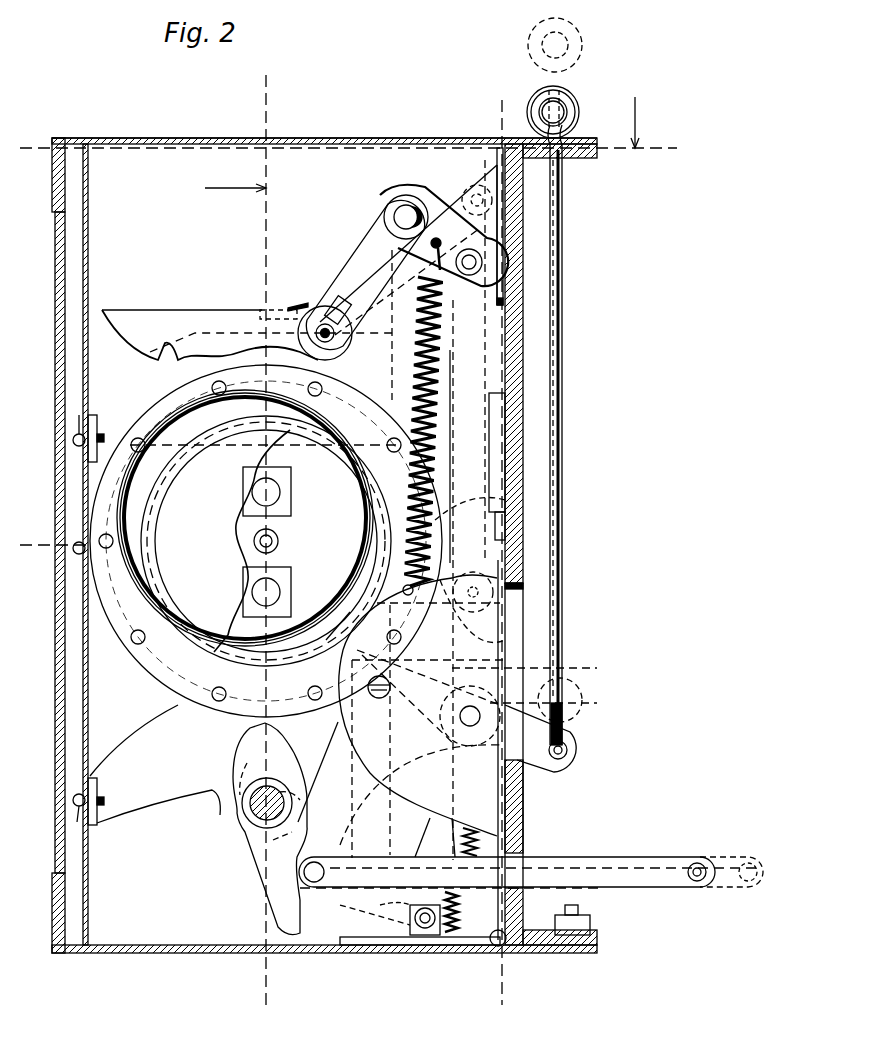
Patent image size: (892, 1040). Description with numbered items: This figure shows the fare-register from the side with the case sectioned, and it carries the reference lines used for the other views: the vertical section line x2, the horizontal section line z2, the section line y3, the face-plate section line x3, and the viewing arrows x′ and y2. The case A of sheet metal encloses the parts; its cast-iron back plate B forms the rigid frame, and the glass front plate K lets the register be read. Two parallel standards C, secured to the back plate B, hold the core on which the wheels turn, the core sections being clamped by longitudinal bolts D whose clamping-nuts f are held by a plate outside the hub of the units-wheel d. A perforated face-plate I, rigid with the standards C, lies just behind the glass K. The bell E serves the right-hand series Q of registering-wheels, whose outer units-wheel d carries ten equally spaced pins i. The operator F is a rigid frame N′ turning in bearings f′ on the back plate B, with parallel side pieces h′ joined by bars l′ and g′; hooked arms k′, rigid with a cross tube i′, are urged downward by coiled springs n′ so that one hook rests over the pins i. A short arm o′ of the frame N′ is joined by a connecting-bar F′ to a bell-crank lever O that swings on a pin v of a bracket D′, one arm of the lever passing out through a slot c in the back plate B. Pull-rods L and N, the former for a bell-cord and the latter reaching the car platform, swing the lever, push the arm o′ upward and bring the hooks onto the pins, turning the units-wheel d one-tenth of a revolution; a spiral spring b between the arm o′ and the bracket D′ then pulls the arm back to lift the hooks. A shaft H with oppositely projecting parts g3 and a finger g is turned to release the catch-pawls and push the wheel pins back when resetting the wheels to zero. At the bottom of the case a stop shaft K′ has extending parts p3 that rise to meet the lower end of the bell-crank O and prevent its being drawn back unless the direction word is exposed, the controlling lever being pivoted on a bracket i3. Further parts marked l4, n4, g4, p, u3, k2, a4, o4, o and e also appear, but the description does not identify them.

The front plate K is at (315, 545).
The case A is at (324, 127).
The face-plate I is at (88, 544).
The back plate B is at (547, 544).
The slot c is at (510, 750).
The dotted line z² z2 is at (353, 160).
The dotted line x² x2 is at (277, 542).
The dotted line y³ y3 is at (501, 551).
The dotted line x³ x3 is at (56, 540).
The arrow y² y2 is at (644, 122).
The arrow x′ is at (235, 197).
The series of registering-wheels Q is at (266, 541).
The outer registering units-wheel d is at (178, 650).
The pins i is at (250, 546).
The bell E is at (265, 541).
The inner ring l4 is at (266, 541).
The longitudinal bolts D is at (275, 542).
The clamping-nuts f is at (280, 518).
The lug n4 is at (331, 633).
The clip o is at (84, 479).
The clip e is at (87, 810).
The standards C is at (214, 764).
The shaft H is at (252, 814).
The finger g is at (285, 912).
The oppositely-projecting parts g3 is at (258, 770).
The hooked arms k′ is at (248, 335).
The bar g4 is at (266, 310).
The coiled springs n′ is at (284, 304).
The operator F is at (360, 280).
The cross rod or tube i′ is at (334, 340).
The bar l′ is at (338, 300).
The side pieces h′ is at (408, 243).
The rod p is at (380, 262).
The bar g′ is at (400, 214).
The rigid frame N′ is at (408, 270).
The bearings f′ is at (477, 191).
The short rigid arm o′ is at (432, 244).
The spiral spring b is at (419, 436).
The connecting-bar F′ is at (470, 510).
The pull-rod L is at (554, 381).
The bell-crank lever O is at (456, 805).
The bracket D′ is at (468, 716).
The pin v is at (384, 690).
The wedge u3 is at (435, 837).
The bracket i3 is at (469, 852).
The pull-rod N is at (531, 872).
The lock or stop shaft K′ is at (446, 940).
The spring k2 is at (458, 926).
The extending parts p3 is at (412, 944).
The link a4 is at (375, 922).
The thumb screw o4 is at (583, 920).